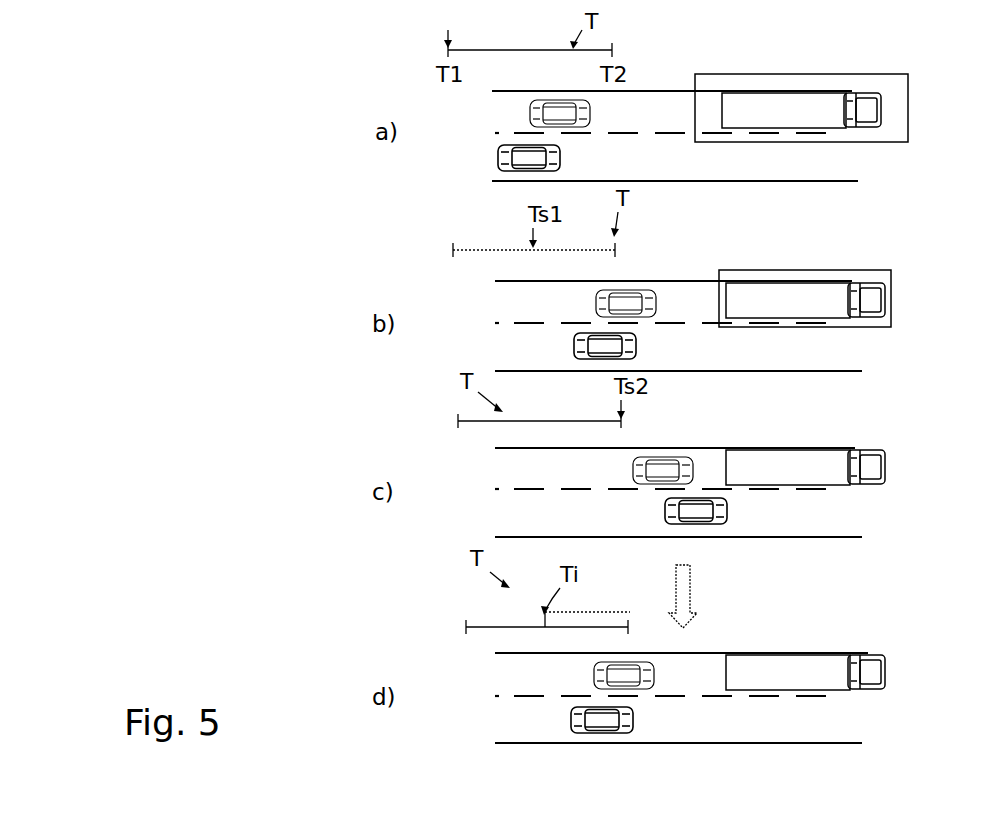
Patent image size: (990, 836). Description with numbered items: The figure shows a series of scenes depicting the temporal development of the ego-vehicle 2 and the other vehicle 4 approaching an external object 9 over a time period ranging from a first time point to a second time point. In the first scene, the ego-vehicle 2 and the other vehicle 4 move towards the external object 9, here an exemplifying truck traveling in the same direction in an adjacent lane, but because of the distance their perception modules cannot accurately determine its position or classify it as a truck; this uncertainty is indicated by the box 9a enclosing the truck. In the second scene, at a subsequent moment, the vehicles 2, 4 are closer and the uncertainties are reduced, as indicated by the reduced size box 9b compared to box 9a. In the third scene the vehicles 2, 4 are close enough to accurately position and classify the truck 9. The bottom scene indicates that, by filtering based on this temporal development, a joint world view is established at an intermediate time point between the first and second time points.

The ego-vehicle 2 is at (517, 172).
The other vehicle 4 is at (530, 109).
The external object 9 is at (881, 107).
The box 9a is at (828, 74).
The reduced size box 9b is at (828, 270).